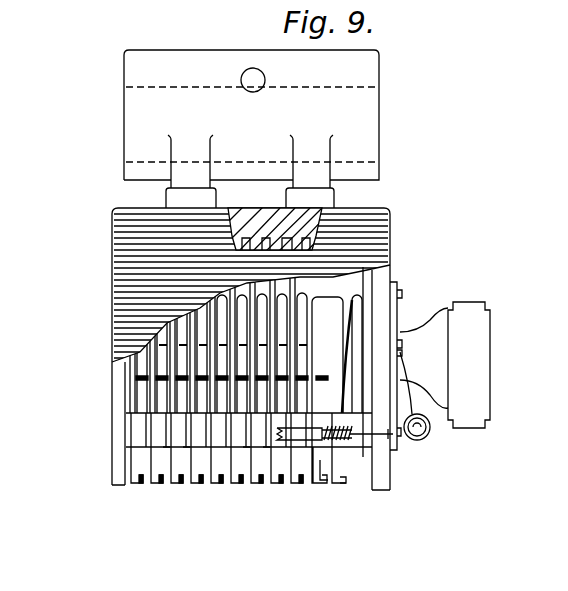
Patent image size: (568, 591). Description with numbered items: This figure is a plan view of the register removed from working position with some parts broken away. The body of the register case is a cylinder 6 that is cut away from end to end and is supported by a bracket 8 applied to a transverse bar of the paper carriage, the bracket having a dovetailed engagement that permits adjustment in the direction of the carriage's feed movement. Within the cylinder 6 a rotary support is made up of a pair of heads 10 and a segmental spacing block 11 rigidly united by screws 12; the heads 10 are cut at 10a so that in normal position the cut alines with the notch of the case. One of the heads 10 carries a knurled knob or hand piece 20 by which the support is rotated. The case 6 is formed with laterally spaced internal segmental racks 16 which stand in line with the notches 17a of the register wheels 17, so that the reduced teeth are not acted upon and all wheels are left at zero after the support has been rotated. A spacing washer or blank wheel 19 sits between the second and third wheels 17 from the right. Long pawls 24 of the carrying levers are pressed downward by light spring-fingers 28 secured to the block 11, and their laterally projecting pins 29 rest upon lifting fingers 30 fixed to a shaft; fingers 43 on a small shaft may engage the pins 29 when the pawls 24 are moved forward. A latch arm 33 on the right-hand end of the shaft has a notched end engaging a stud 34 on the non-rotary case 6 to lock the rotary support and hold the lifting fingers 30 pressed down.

The cylinder 6 is at (96, 291).
The bracket 8 is at (380, 153).
The heads 10 is at (115, 445).
The cut of the heads 10a is at (343, 487).
The segmental spacing block 11 is at (353, 277).
The screws 12 is at (420, 430).
The internal segmental racks 16 is at (268, 240).
The register wheels 17 is at (143, 487).
The notch 17a is at (163, 487).
The spacing washer or blank wheel 19 is at (322, 467).
The knurled knob or hand piece 20 is at (473, 388).
The pawls 24 is at (182, 449).
The spring-fingers 28 is at (137, 401).
The pins 29 is at (130, 359).
The lifting fingers 30 is at (319, 376).
The latch arm 33 is at (400, 320).
The stud 34 is at (400, 291).
The fingers 43 is at (315, 437).